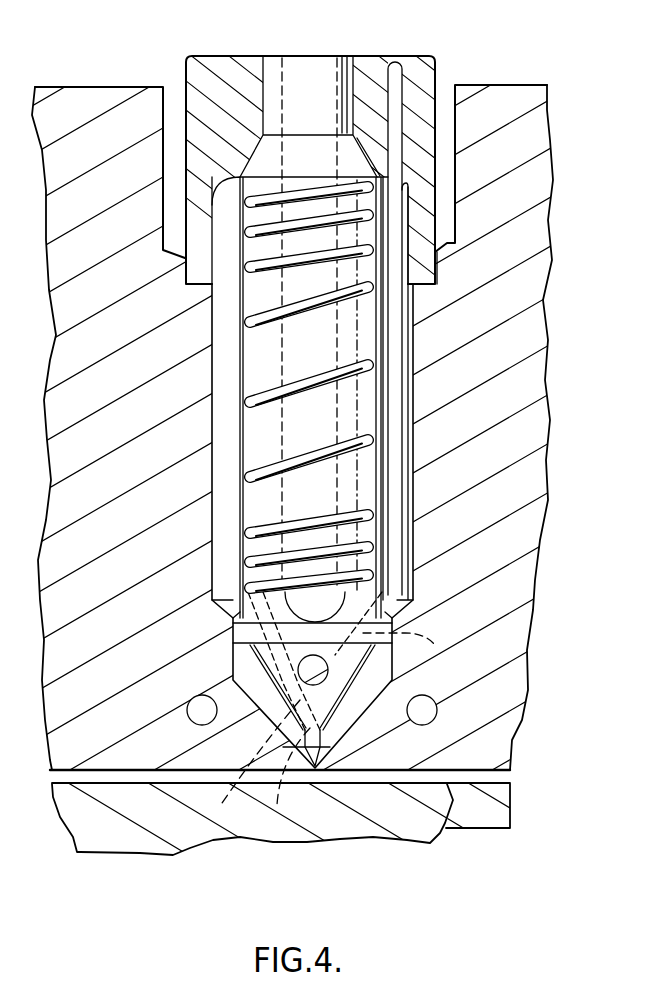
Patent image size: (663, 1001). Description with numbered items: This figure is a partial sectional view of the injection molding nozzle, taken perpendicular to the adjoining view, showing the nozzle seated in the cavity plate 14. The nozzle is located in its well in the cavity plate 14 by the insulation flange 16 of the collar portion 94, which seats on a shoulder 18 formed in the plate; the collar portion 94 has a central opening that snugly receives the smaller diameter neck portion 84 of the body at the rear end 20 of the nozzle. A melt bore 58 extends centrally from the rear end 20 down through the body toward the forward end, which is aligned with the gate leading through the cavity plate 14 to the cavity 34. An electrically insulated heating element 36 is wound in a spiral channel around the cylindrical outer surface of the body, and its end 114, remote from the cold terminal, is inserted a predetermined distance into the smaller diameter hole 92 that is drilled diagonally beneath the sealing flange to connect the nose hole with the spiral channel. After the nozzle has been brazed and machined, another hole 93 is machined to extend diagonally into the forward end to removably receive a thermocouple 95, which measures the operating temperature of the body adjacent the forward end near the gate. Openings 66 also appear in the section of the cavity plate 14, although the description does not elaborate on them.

The cavity plate 14 is at (527, 566).
The insulation flange 16 is at (423, 263).
The shoulder 18 is at (427, 286).
The rear end 20 is at (228, 56).
The cavity 34 is at (445, 828).
The heating element 36 is at (368, 443).
The melt bore 58 is at (327, 490).
The fuel passages 66 is at (437, 712).
The neck portion 84 is at (350, 72).
The hole 92 is at (247, 768).
The hole 93 is at (347, 653).
The collar portion 94 is at (417, 78).
The thermocouple 95 is at (417, 648).
The end of heating element 114 is at (285, 782).